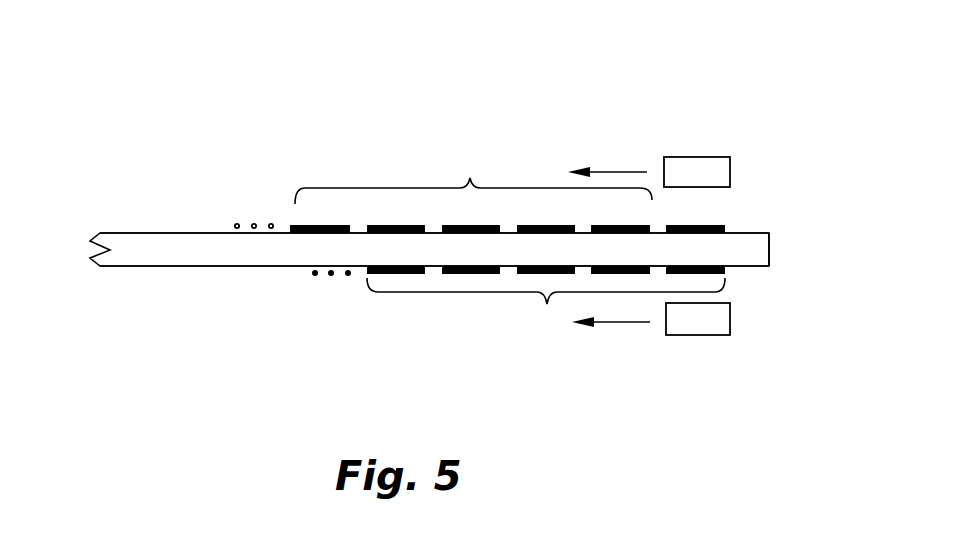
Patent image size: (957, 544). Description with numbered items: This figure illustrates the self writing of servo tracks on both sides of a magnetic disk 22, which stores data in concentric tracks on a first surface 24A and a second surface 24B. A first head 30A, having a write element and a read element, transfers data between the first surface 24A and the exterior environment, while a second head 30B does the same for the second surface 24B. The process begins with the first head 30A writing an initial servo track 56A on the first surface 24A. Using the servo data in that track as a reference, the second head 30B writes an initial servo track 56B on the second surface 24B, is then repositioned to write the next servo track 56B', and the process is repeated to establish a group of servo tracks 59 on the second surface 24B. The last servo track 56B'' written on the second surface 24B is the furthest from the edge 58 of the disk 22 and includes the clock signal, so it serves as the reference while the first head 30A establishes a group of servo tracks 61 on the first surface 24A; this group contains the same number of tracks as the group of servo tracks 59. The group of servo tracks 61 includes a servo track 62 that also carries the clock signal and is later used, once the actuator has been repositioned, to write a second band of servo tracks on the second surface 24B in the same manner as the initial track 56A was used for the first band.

The magnetic disk 22 is at (212, 182).
The first surface 24A is at (145, 233).
The second surface 24B is at (142, 268).
The edge 58 is at (770, 247).
The initial servo track 56A is at (725, 227).
The initial servo track 56B is at (618, 292).
The next servo track 56B' is at (743, 319).
The last servo track 56B'' is at (361, 315).
The group of servo tracks 59 is at (547, 304).
The group of servo tracks 61 is at (470, 178).
The servo track 62 is at (295, 225).
The first head 30A is at (687, 157).
The second head 30B is at (688, 335).